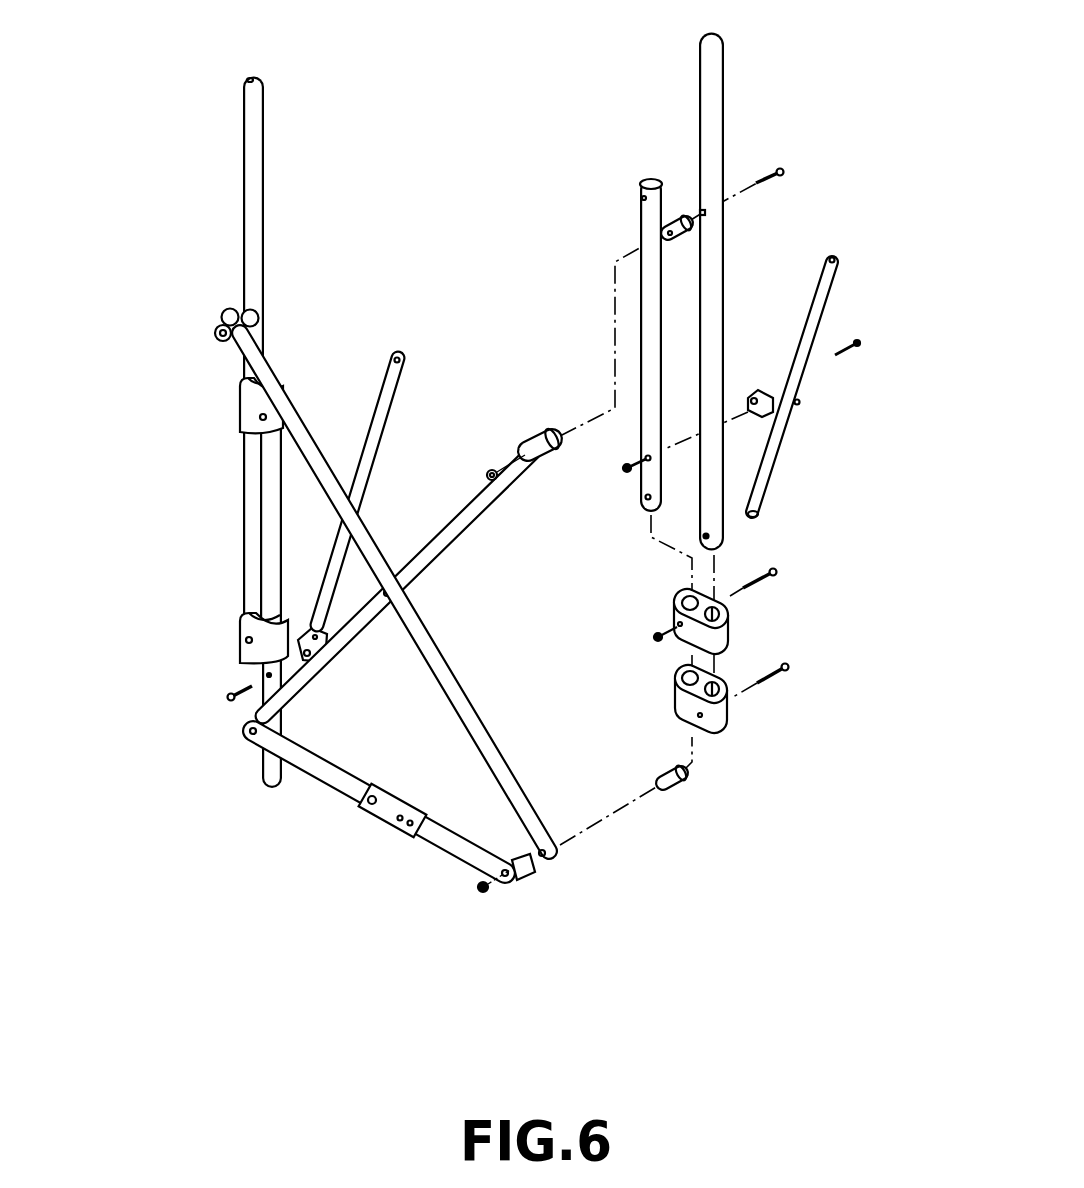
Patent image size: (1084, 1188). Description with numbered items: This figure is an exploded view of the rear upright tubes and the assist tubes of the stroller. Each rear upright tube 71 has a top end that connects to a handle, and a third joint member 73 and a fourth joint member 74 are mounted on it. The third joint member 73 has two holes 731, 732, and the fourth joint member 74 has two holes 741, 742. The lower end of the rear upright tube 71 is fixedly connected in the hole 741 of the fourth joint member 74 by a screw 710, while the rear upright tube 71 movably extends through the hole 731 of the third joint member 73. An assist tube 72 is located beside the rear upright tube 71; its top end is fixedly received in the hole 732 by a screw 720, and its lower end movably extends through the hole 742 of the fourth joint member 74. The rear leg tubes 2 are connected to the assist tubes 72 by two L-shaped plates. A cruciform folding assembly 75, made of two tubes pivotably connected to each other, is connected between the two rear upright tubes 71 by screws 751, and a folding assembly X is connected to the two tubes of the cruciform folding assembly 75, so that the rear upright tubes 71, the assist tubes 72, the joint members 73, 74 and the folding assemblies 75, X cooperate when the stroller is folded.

The rear leg tube 2 is at (256, 773).
The rear upright tube 71 is at (250, 527).
The assist tube 72 is at (270, 575).
The third joint member 73 is at (242, 410).
The fourth joint member 74 is at (240, 630).
The cruciform folding assembly 75 is at (328, 663).
The screw 710 is at (240, 656).
The screw 720 is at (260, 418).
The hole 731 is at (730, 603).
The hole 732 is at (677, 600).
The hole 741 is at (738, 675).
The hole 742 is at (675, 682).
The screw 751 is at (218, 335).
The folding assembly X is at (338, 780).